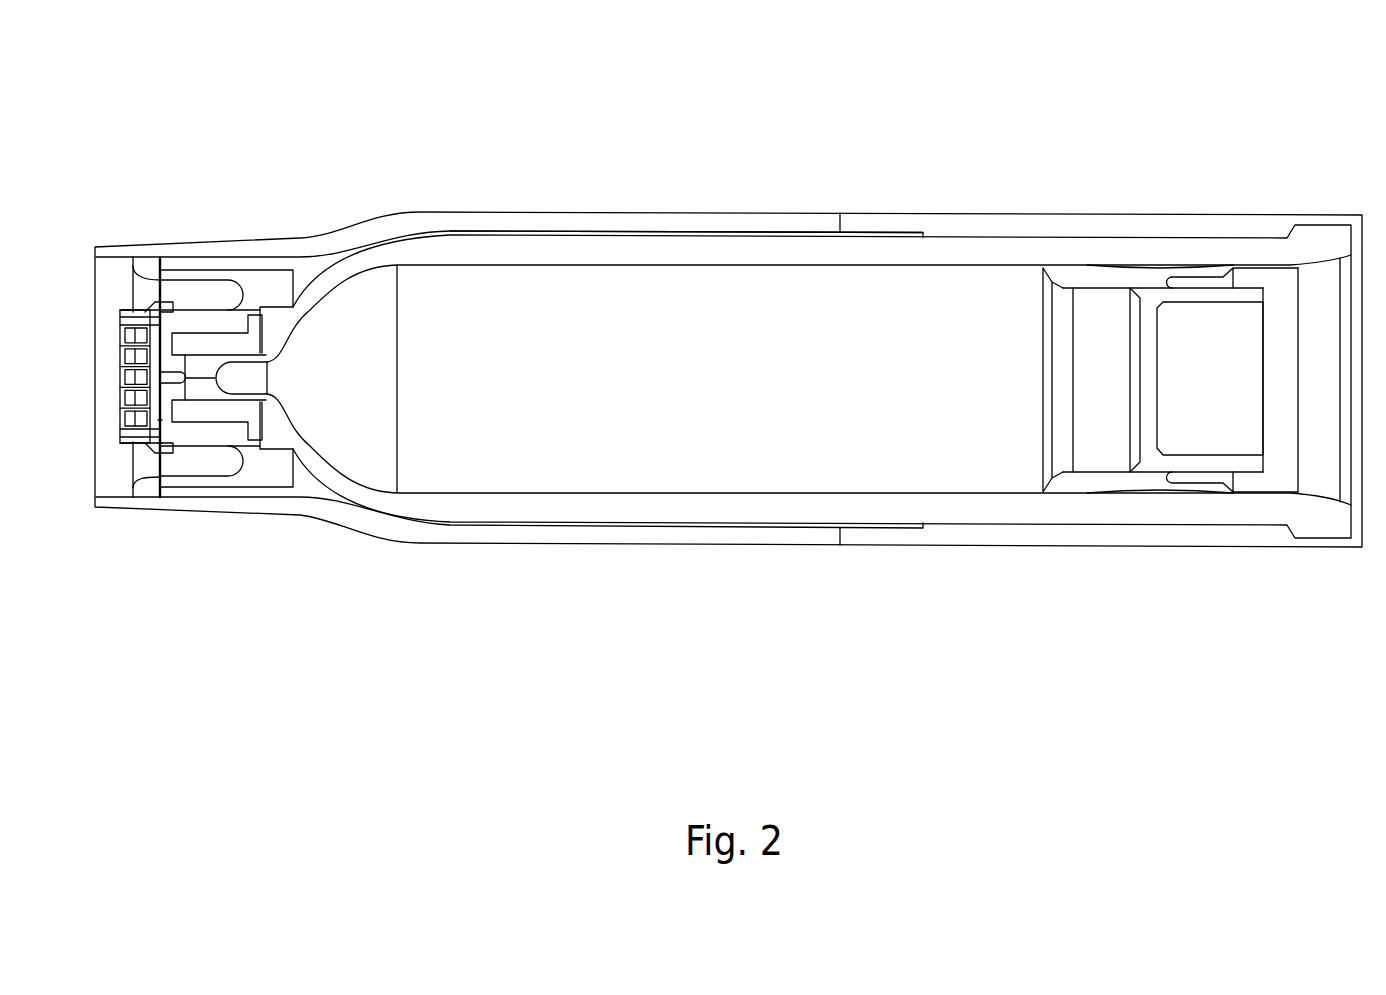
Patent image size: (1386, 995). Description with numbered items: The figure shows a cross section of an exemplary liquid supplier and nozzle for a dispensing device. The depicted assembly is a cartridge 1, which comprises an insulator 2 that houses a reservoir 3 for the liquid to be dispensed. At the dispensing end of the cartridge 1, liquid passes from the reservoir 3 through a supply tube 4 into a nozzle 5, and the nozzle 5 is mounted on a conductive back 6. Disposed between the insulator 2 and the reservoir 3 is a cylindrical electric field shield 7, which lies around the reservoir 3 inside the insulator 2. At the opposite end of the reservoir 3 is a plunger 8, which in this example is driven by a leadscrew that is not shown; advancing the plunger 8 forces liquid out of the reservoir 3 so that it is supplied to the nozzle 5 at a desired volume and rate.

The cartridge 1 is at (660, 72).
The insulator 2 is at (140, 312).
The reservoir 3 is at (413, 507).
The supply tube 4 is at (178, 385).
The nozzle 5 is at (156, 420).
The conductive back 6 is at (258, 288).
The cylindrical electric field shield 7 is at (888, 237).
The plunger 8 is at (1073, 383).